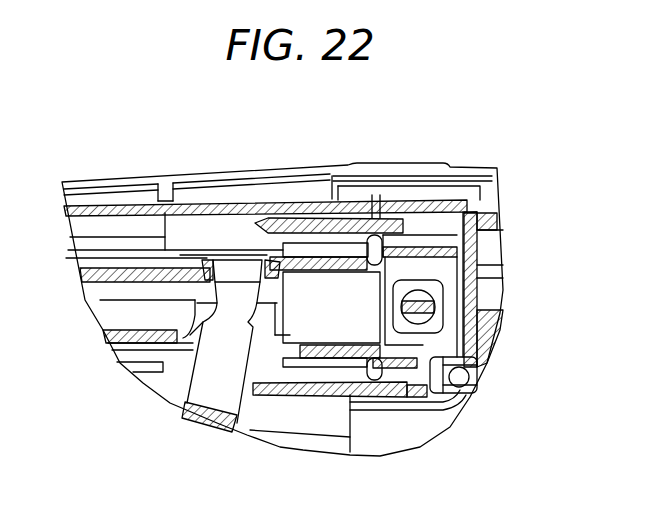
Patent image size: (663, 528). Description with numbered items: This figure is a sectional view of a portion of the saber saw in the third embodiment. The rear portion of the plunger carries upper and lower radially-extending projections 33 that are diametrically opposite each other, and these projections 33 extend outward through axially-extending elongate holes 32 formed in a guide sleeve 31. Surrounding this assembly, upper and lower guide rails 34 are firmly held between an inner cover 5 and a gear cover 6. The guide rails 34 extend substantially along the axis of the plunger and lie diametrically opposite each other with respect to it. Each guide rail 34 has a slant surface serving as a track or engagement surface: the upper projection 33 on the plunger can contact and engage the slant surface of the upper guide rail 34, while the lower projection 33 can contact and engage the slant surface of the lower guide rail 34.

The inner cover 5 is at (450, 200).
The gear cover 6 is at (122, 198).
The guide sleeve 31 is at (232, 250).
The elongate holes 32 is at (303, 247).
The projections 33 is at (370, 235).
The guide rails 34 is at (374, 225).